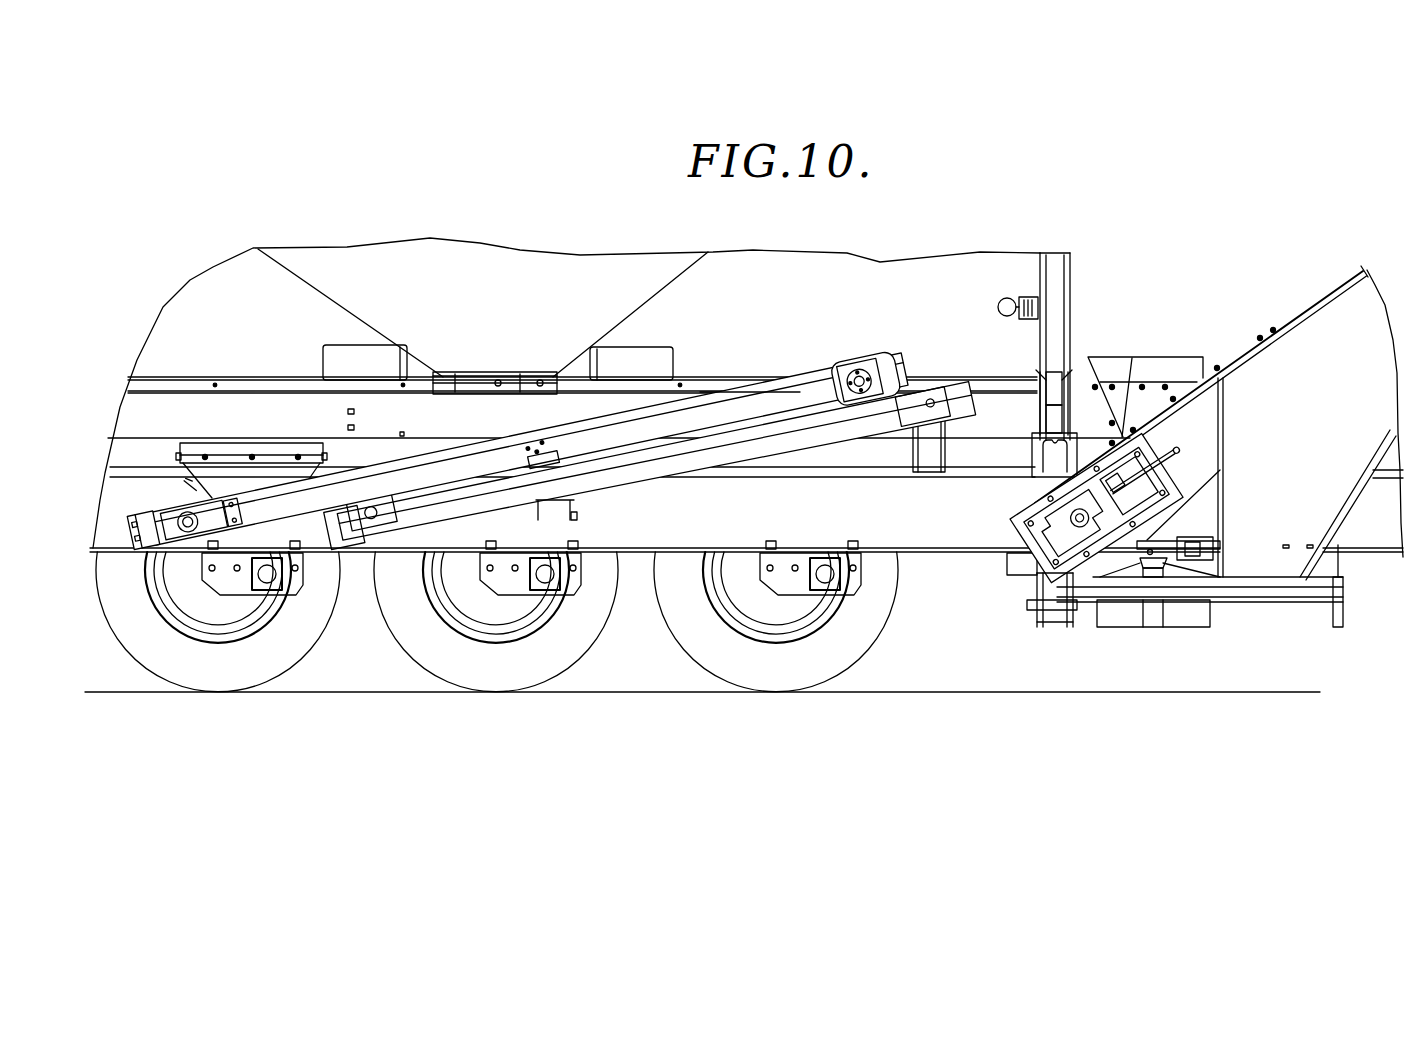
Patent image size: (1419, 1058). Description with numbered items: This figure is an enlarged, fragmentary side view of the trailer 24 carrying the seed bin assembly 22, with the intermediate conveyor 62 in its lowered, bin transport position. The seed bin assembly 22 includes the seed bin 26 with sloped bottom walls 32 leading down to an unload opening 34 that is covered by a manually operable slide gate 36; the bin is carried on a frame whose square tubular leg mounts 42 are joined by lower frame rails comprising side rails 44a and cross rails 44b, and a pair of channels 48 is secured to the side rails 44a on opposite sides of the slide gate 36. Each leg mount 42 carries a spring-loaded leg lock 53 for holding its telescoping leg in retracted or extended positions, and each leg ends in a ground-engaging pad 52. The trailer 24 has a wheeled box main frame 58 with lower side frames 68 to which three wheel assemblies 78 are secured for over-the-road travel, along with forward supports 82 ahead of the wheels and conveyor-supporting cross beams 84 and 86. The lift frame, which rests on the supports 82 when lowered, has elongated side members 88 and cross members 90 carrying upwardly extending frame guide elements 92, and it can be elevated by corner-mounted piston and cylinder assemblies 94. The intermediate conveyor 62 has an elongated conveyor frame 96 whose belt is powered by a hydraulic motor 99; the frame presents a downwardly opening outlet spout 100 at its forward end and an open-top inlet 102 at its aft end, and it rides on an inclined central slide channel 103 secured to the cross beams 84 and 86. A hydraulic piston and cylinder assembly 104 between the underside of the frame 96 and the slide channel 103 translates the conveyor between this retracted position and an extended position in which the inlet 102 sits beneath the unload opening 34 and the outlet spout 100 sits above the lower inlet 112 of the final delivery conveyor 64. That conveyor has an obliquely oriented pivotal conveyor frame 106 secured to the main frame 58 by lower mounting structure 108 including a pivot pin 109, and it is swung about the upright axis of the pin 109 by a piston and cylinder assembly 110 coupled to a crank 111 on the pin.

The seed bin assembly 22 is at (566, 348).
The trailer 24 is at (1358, 660).
The seed bin 26 is at (612, 270).
The sloped bottom walls 32 is at (322, 287).
The unload opening 34 is at (480, 362).
The slide gate 36 is at (525, 376).
The leg mounts 42 is at (1052, 262).
The side rails 44a is at (718, 383).
The cross rails 44b is at (1045, 365).
The channels 48 is at (347, 345).
The ground-engaging pad 52 is at (1143, 526).
The leg lock 53 is at (1030, 298).
The wheeled box main frame 58 is at (912, 570).
The intermediate conveyor 62 is at (549, 411).
The final delivery conveyor 64 is at (1219, 388).
The lower side frames 68 is at (945, 538).
The wheel assemblies 78 is at (425, 712).
The forward supports 82 is at (1035, 466).
The conveyor-supporting cross beam 84 is at (912, 448).
The conveyor-supporting cross beam 86 is at (578, 515).
The side members 88 is at (240, 388).
The cross members 90 is at (1045, 406).
The frame guide elements 92 is at (1040, 375).
The piston and cylinder assemblies 94 is at (1052, 635).
The conveyor frame 96 is at (518, 452).
The hydraulic motor 99 is at (892, 361).
The outlet spout 100 is at (895, 370).
The inlet 102 is at (213, 450).
The slide channel 103 is at (630, 478).
The hydraulic piston and cylinder assembly 104 is at (802, 452).
The pivotal conveyor frame 106 is at (1352, 300).
The lower mounting structure 108 is at (1225, 645).
The pivot pin 109 is at (1155, 625).
The piston and cylinder assembly 110 is at (1225, 548).
The crank 111 is at (1155, 545).
The lower inlet 112 is at (1190, 366).